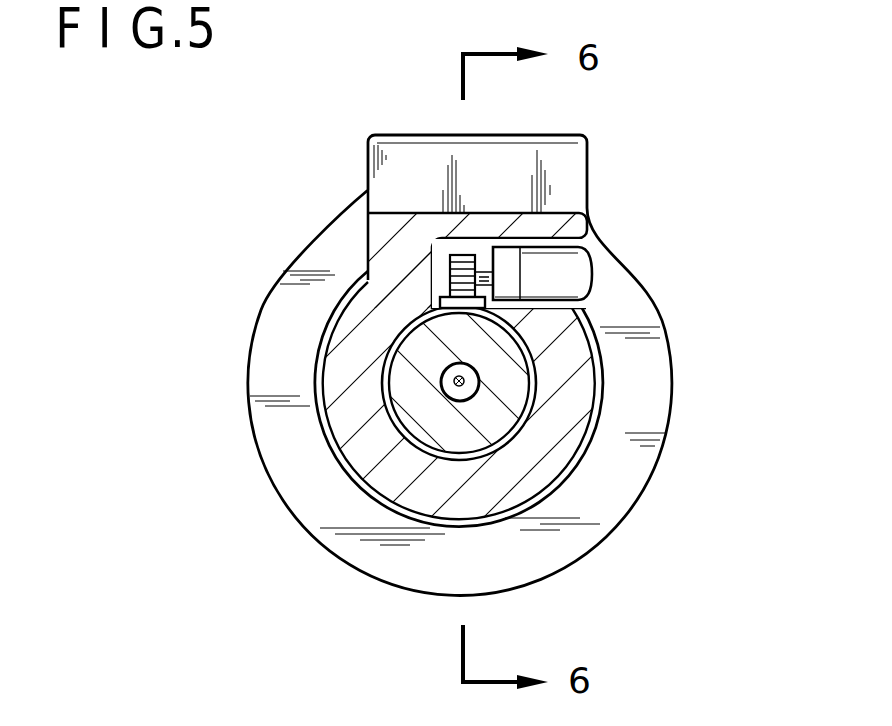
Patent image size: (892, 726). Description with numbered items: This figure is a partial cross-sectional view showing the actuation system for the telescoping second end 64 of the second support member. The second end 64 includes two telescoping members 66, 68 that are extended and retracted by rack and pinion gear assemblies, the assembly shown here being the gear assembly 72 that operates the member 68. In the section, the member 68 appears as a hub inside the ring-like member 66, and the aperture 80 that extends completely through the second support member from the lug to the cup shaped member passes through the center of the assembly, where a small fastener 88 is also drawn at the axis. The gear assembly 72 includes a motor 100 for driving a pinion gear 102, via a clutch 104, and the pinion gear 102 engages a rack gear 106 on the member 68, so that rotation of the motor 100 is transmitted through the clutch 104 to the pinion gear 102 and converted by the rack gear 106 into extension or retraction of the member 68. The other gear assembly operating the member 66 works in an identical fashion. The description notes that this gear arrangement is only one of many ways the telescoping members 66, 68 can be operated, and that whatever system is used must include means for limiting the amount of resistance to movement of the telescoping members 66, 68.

The second end 64 is at (597, 546).
The telescoping member 66 is at (328, 433).
The telescoping member 68 is at (513, 437).
The rack and pinion gear assembly 72 is at (502, 212).
The aperture 80 is at (459, 401).
The fastener 88 is at (479, 382).
The motor 100 is at (590, 277).
The pinion gear 102 is at (444, 266).
The clutch 104 is at (505, 270).
The rack gear 106 is at (456, 303).